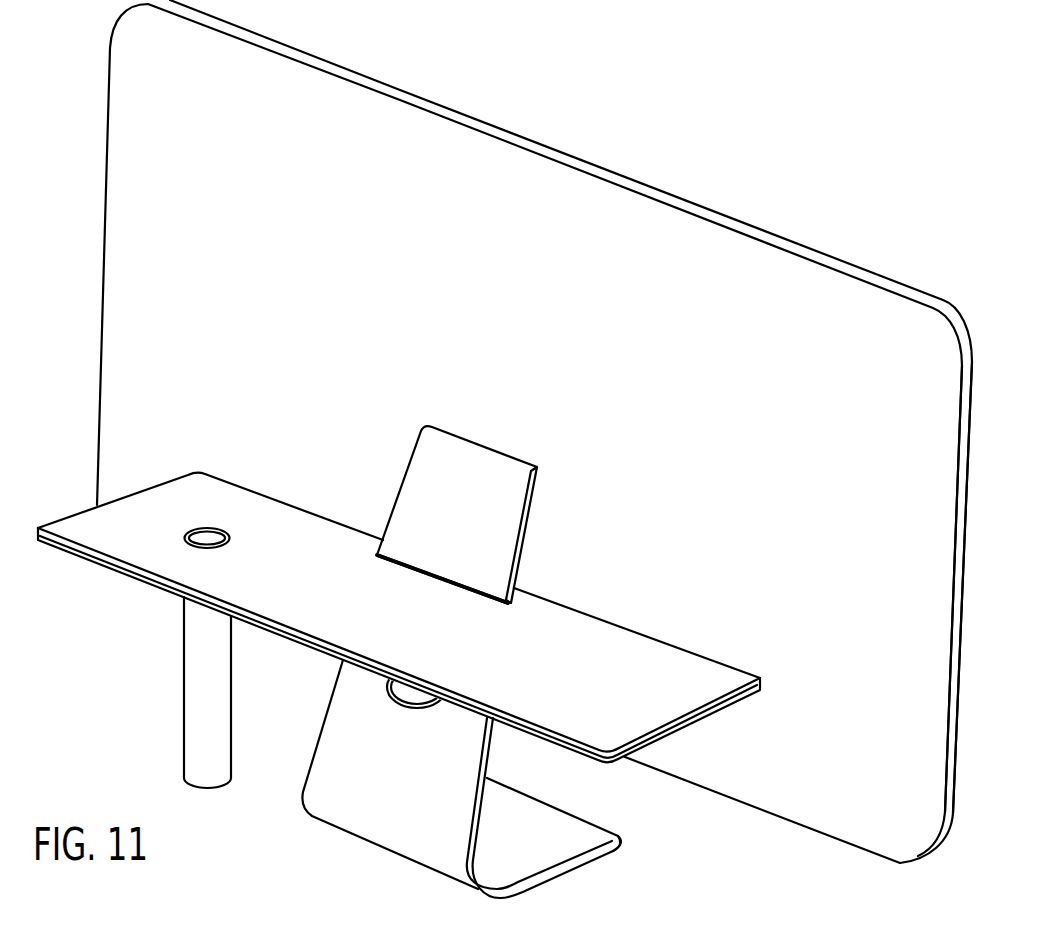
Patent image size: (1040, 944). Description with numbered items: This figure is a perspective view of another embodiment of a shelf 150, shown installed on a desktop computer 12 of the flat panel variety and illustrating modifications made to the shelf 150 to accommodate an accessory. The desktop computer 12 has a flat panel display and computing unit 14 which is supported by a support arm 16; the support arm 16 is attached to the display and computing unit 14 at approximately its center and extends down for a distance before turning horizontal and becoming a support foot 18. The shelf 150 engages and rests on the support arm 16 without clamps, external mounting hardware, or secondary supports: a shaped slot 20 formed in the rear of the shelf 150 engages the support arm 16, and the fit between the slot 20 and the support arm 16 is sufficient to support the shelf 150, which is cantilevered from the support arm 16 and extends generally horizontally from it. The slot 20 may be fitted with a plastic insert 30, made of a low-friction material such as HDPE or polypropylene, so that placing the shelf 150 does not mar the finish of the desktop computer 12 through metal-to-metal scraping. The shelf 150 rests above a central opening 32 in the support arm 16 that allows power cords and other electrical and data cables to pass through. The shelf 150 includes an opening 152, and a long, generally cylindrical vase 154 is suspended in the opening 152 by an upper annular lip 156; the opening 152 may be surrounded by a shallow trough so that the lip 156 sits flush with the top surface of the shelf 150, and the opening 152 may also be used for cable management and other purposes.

The desktop computer 12 is at (98, 113).
The flat panel display and computing unit 14 is at (937, 388).
The support arm 16 is at (332, 742).
The support foot 18 is at (573, 848).
The shaped slot 20 is at (486, 608).
The plastic insert 30 is at (430, 577).
The central opening 32 is at (412, 708).
The shelf 150 is at (70, 504).
The opening 152 is at (207, 551).
The vase 154 is at (197, 670).
The upper annular lip 156 is at (214, 529).